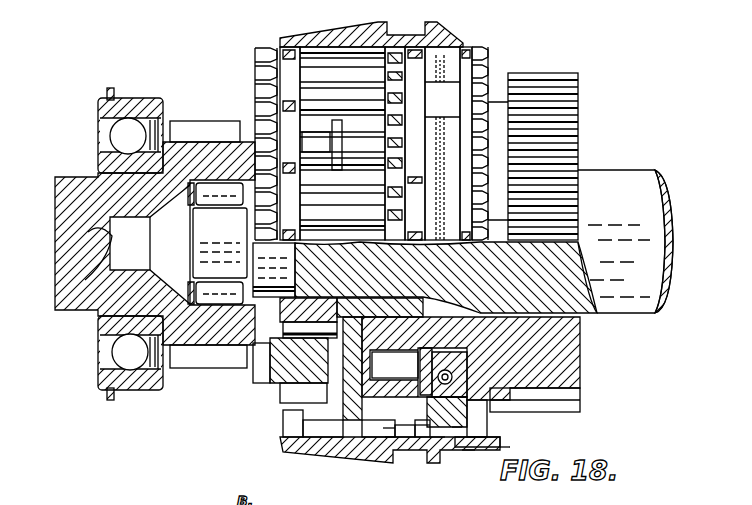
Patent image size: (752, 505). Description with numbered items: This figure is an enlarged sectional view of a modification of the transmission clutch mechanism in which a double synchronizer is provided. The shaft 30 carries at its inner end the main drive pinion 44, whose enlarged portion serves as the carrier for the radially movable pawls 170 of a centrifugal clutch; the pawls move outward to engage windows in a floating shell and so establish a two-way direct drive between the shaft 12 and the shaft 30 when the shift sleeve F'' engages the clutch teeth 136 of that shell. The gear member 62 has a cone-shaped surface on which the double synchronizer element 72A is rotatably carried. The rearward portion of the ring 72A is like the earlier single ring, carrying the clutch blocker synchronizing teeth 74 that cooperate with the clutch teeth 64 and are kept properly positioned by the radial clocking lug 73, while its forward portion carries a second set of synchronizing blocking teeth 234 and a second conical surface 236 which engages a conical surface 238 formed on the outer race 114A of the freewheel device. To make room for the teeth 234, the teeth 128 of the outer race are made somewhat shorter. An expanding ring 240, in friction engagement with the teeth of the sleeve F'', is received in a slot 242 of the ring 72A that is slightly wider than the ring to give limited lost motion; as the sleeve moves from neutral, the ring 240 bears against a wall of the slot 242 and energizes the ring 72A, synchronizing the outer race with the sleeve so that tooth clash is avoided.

The shaft 30 is at (86, 230).
The main drive pinion 44 is at (200, 133).
The gear member 62 is at (548, 73).
The radial clocking lug 73 is at (443, 99).
The shaft 12 is at (636, 192).
The pawls 170 is at (300, 362).
The clutch teeth 136 is at (268, 430).
The conical surface 238 is at (395, 365).
The slot 242 is at (505, 378).
The expanding ring 240 is at (540, 400).
The clutch teeth 64 is at (462, 442).
The clutch blocker synchronizing teeth 74 is at (500, 446).
The double synchronizer element 72A is at (470, 456).
The second conical surface 236 is at (435, 440).
The second set of synchronizing blocking teeth 234 is at (425, 432).
The teeth of the freewheel device outer race 128 is at (388, 430).
The outer race of the freewheel device 114A is at (388, 458).
The shift sleeve F'' is at (457, 462).